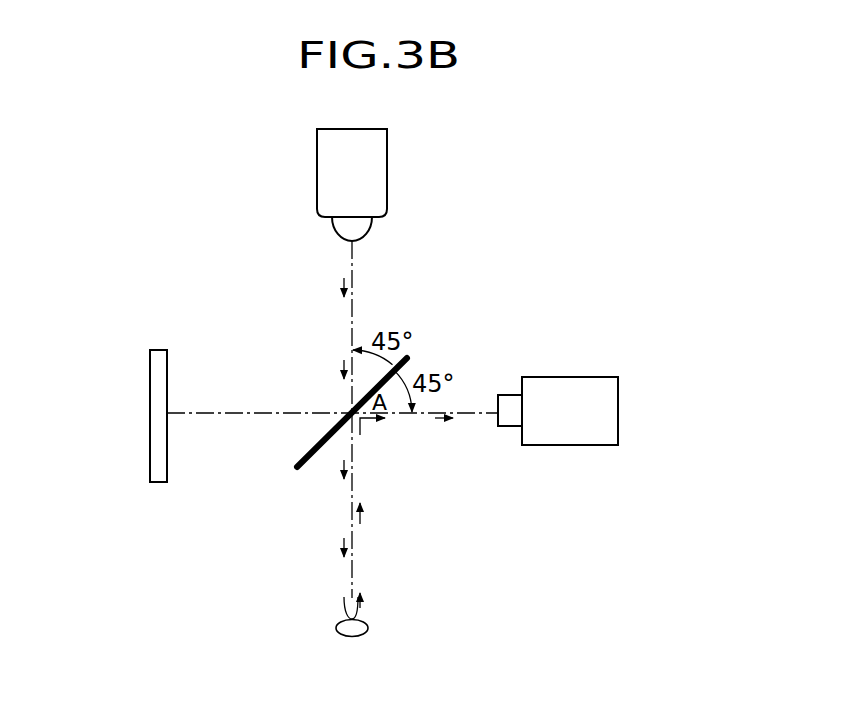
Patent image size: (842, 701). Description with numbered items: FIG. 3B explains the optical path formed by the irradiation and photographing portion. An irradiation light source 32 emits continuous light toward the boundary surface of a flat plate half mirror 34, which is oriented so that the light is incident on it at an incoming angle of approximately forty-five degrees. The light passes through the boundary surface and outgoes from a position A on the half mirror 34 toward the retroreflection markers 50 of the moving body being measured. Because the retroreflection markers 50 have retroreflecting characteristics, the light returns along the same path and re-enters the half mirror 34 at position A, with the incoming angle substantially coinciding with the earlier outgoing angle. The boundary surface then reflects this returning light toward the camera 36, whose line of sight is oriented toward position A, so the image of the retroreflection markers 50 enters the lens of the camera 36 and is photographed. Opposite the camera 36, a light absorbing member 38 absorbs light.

The irradiation light source 32 is at (375, 168).
The half mirror 34 is at (406, 360).
The camera 36 is at (608, 412).
The light absorbing member 38 is at (157, 393).
The retroreflection markers 50 is at (366, 626).